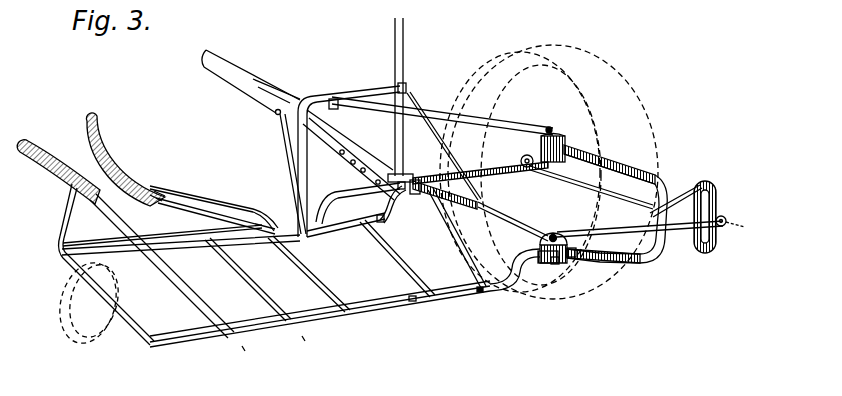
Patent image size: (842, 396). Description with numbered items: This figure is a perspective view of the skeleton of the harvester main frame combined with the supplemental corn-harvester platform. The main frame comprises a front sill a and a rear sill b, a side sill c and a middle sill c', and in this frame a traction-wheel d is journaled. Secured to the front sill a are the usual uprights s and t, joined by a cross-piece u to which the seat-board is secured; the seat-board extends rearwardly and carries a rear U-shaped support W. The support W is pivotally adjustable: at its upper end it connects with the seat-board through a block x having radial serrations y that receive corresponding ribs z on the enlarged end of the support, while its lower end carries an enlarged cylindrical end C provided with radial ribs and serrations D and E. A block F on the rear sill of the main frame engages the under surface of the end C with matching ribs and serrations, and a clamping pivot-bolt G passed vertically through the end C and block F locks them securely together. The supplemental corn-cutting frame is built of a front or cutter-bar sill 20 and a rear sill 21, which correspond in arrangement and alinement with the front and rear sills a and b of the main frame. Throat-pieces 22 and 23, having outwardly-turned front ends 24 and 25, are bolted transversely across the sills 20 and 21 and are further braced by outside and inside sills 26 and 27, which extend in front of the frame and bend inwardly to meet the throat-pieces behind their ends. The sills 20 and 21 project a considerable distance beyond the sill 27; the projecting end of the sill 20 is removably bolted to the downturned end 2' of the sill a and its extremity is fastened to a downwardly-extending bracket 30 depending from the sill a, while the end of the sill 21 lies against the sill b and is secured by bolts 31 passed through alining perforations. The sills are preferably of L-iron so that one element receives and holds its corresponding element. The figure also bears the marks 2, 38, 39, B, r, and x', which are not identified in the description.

The frame base of post 2 is at (346, 231).
The downturned end 2' is at (358, 199).
The front or cutter-bar sill 20 is at (274, 254).
The rear sill 21 is at (333, 313).
The throat-piece 22 is at (63, 178).
The throat-piece 23 is at (127, 171).
The outwardly-turned front end 24 is at (37, 144).
The outwardly-turned front end 25 is at (100, 122).
The outside sill 26 is at (58, 247).
The inside sill 27 is at (257, 213).
The downwardly-extending bracket 30 is at (397, 218).
The bolts 31 is at (413, 301).
The lower brace rail 38 is at (223, 220).
The front cross rail 39 is at (162, 231).
The front sill a is at (432, 178).
The rear sill b is at (679, 232).
The pivot knob B is at (552, 129).
The side sill c is at (591, 188).
The middle sill c' is at (513, 218).
The enlarged cylindrical end C is at (540, 243).
The traction-wheel d is at (648, 148).
The radial ribs and serrations D is at (571, 259).
The radial ribs and serrations E is at (548, 262).
The block F is at (554, 264).
The clamping pivot-bolt G is at (553, 234).
The diagonal strut r is at (430, 112).
The upright s is at (306, 159).
The upright t is at (394, 131).
The cross-piece u is at (372, 88).
The rear U-shaped support W is at (656, 191).
The block x is at (609, 152).
The bar edge x' is at (609, 160).
The radial serrations y is at (541, 147).
The ribs z is at (480, 178).